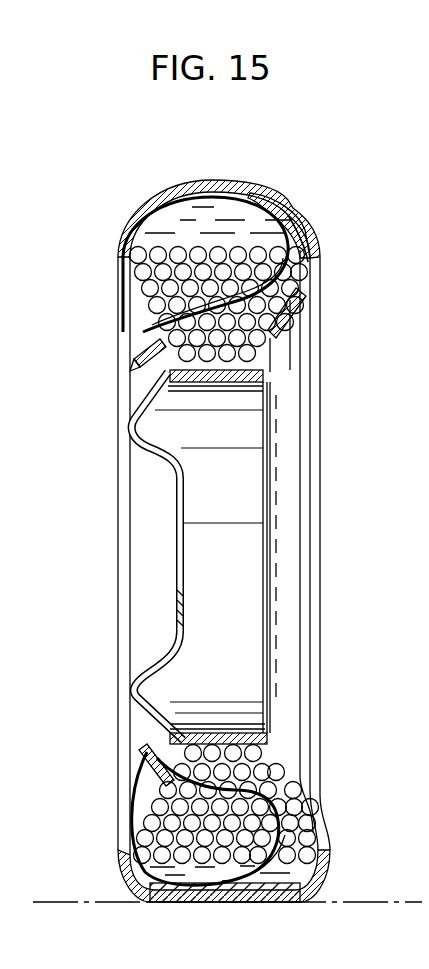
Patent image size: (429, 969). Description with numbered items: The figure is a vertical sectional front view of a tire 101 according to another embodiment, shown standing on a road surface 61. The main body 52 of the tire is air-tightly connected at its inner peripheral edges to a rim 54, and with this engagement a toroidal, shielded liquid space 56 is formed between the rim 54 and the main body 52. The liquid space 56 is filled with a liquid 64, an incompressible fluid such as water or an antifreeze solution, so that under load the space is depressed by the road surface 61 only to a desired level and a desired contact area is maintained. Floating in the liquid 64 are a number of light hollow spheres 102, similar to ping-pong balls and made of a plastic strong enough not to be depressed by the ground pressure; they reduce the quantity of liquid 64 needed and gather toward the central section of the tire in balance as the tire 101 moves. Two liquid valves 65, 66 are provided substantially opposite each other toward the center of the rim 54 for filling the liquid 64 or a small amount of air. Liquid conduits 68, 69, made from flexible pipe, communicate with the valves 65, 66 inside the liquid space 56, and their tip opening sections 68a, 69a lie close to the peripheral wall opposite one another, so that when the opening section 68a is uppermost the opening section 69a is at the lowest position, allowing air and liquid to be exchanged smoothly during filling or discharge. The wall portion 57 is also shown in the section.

The tire 101 is at (110, 218).
The main body of the tire 52 is at (130, 222).
The liquid space 56 is at (155, 215).
The liquid 64 is at (213, 207).
The opening section 68a is at (246, 206).
The liquid conduit 68 is at (306, 224).
The hollow sphere 102 is at (132, 257).
The liquid valve 65 is at (130, 358).
The rim 54 is at (290, 366).
The bellows wall 57 is at (157, 465).
The liquid valve 66 is at (142, 760).
The liquid conduit 69 is at (268, 872).
The opening section 69a is at (221, 879).
The road surface 61 is at (340, 904).